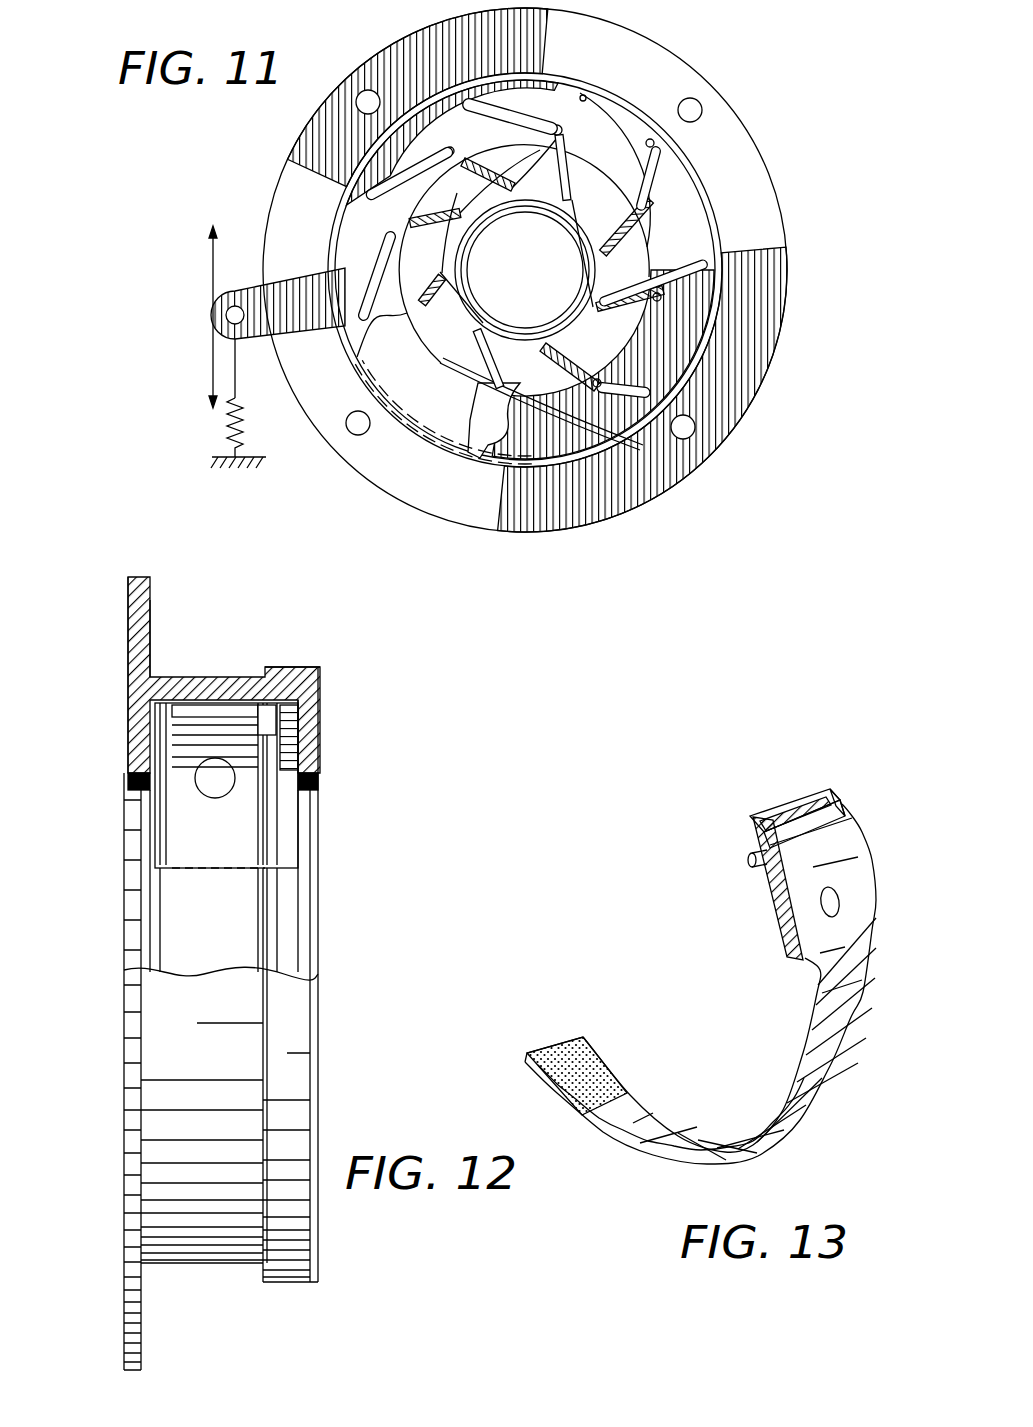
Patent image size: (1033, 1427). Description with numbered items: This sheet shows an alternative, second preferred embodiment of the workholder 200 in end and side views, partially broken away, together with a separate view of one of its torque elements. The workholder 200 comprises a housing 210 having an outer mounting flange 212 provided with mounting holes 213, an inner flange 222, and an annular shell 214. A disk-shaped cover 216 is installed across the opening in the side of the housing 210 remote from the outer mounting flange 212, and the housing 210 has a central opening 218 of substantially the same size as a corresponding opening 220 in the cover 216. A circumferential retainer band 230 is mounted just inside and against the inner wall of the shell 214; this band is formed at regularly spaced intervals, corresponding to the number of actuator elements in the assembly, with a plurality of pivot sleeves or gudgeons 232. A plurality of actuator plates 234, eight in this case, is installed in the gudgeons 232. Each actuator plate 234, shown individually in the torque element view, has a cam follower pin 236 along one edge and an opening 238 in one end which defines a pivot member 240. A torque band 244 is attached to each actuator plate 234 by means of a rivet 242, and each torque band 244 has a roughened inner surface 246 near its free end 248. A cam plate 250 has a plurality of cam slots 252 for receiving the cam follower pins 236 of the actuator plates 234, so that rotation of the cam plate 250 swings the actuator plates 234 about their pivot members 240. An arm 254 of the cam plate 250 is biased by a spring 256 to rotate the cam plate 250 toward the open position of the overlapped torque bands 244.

In FIG. 11, the workholder 200 is at (430, 15).
In FIG. 12, the workholder 200 is at (188, 614).
In FIG. 12, the housing 210 is at (185, 672).
In FIG. 12, the outer mounting flange 212 is at (128, 610).
In FIG. 11, the mounting holes 213 is at (695, 106).
In FIG. 12, the annular shell 214 is at (252, 676).
In FIG. 12, the disk-shaped cover 216 is at (320, 700).
In FIG. 12, the central opening 218 is at (128, 890).
In FIG. 12, the opening 220 is at (318, 838).
In FIG. 12, the inner flange 222 is at (124, 738).
In FIG. 11, the circumferential retainer band 230 is at (585, 95).
In FIG. 11, the gudgeons 232 is at (655, 140).
In FIG. 12, the gudgeons 232 is at (285, 727).
In FIG. 11, the actuator plate 234 is at (660, 182).
In FIG. 12, the actuator plate 234 is at (150, 838).
In FIG. 13, the actuator plate 234 is at (797, 790).
In FIG. 12, the cam follower pin 236 is at (298, 750).
In FIG. 13, the cam follower pin 236 is at (750, 856).
In FIG. 13, the opening 238 is at (815, 792).
In FIG. 12, the pivot member 240 is at (300, 696).
In FIG. 13, the pivot member 240 is at (784, 804).
In FIG. 12, the rivet 242 is at (212, 796).
In FIG. 13, the rivet 242 is at (840, 897).
In FIG. 11, the torque band 244 is at (632, 346).
In FIG. 12, the torque band 244 is at (252, 930).
In FIG. 13, the torque band 244 is at (842, 1066).
In FIG. 13, the roughened inner surface 246 is at (604, 1072).
In FIG. 13, the free end 248 is at (587, 1007).
In FIG. 11, the cam plate 250 is at (438, 108).
In FIG. 11, the cam slots 252 is at (483, 72).
In FIG. 11, the arm 254 is at (300, 288).
In FIG. 11, the spring 256 is at (449, 148).